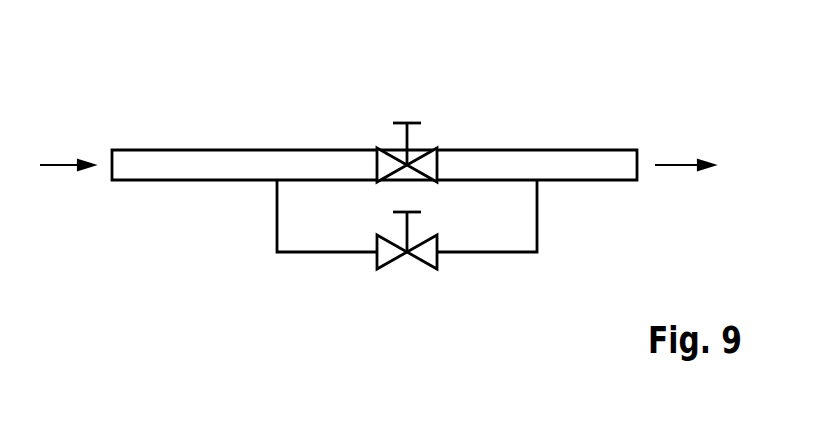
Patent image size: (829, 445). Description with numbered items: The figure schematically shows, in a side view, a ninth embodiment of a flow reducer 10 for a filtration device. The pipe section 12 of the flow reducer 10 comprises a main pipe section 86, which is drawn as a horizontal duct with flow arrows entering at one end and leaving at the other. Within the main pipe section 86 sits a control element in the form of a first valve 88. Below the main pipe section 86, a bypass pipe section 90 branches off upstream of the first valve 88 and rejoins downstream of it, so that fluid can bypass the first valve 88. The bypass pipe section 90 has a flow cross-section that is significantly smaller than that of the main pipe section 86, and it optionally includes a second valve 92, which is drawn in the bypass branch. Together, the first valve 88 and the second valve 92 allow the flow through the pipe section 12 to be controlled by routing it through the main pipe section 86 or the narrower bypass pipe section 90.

The flow reducer 10 is at (568, 105).
The pipe section 12 is at (198, 228).
The main pipe section 86 is at (210, 165).
The first valve 88 is at (425, 150).
The bypass pipe section 90 is at (314, 254).
The second valve 92 is at (417, 270).